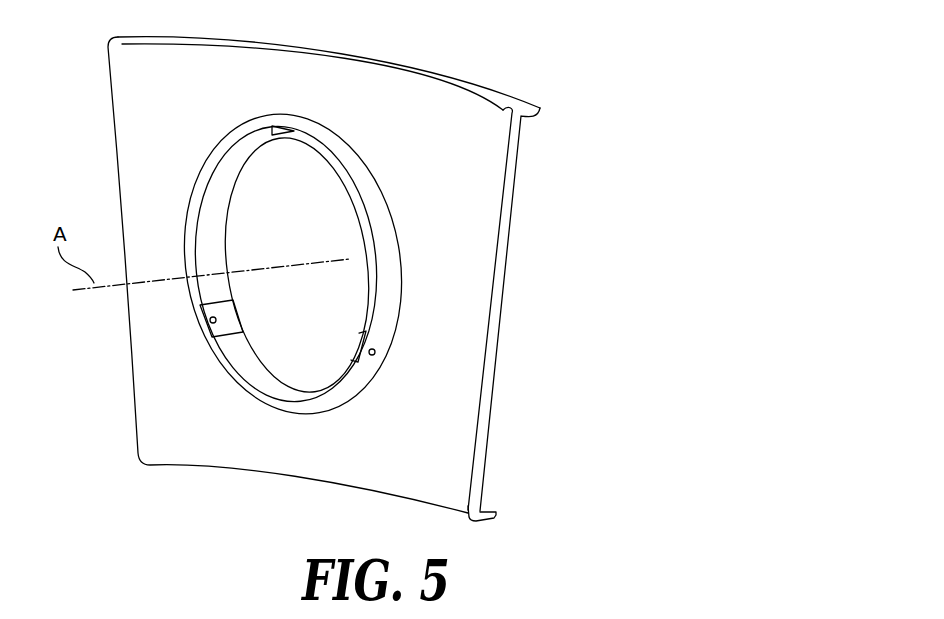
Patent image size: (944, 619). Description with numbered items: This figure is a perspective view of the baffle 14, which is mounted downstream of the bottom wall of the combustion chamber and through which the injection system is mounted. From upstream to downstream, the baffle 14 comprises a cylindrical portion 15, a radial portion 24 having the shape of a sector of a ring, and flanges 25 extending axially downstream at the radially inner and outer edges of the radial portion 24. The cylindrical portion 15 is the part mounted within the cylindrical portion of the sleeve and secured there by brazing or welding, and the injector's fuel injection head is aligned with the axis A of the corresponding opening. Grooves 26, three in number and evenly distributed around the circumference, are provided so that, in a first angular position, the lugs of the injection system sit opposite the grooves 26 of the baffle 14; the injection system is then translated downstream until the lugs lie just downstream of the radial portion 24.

The baffle 14 is at (540, 80).
The cylindrical portion 15 is at (248, 366).
The radial portion 24 is at (466, 267).
The flanges 25 is at (453, 80).
The grooves 26 is at (230, 320).